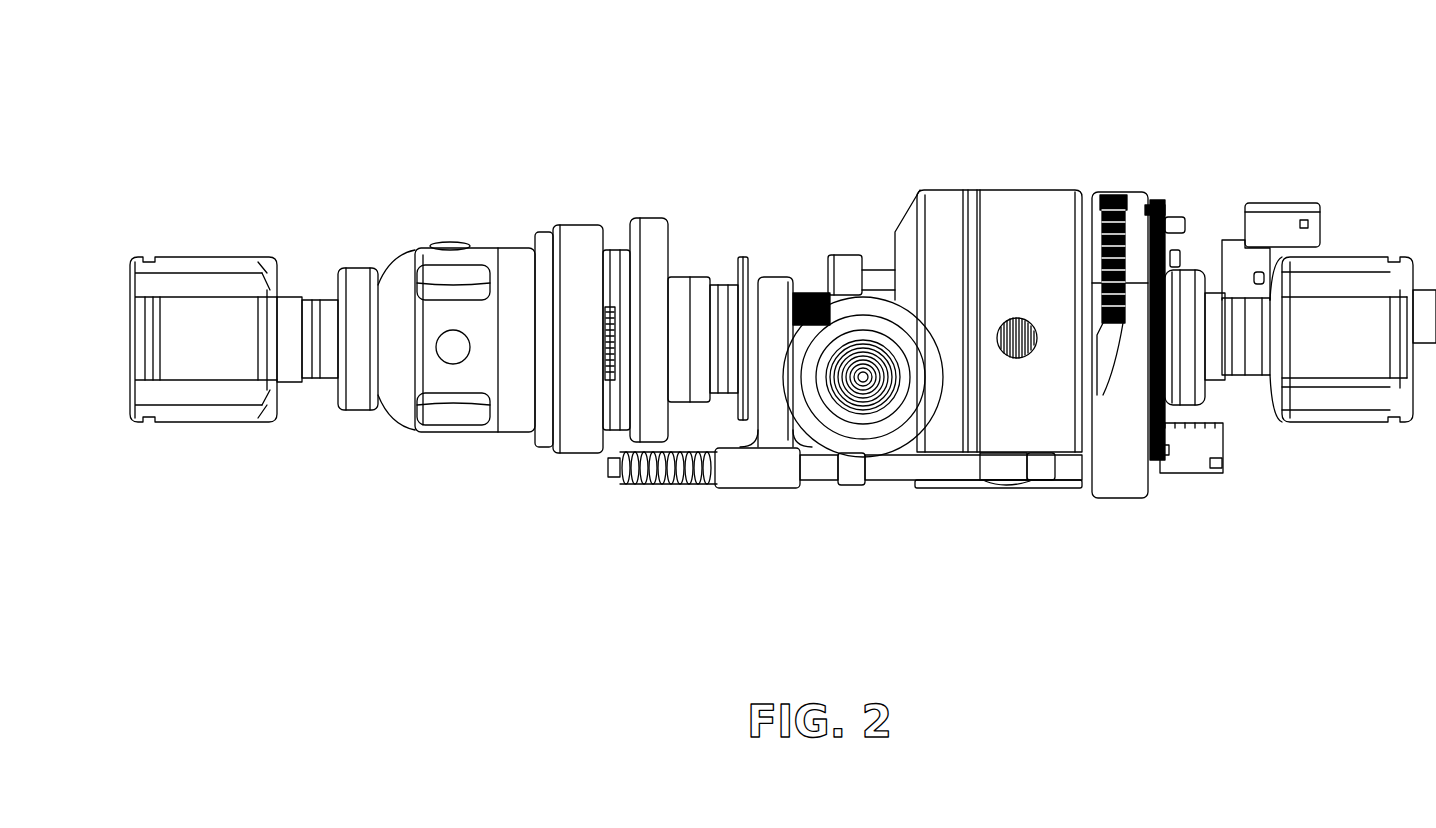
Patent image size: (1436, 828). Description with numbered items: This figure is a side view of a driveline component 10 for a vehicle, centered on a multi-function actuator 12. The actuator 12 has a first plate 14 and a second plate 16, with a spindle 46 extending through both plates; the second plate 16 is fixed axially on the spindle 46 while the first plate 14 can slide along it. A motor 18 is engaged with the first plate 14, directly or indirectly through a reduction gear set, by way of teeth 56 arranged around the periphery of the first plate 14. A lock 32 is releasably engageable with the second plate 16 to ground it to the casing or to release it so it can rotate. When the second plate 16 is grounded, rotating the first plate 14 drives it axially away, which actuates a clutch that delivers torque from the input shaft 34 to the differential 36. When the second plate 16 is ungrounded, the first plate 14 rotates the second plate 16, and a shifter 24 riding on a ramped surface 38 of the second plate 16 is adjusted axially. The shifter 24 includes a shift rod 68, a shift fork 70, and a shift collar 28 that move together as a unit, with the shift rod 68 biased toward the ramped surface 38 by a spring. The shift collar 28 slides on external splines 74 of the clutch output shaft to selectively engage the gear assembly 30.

The driveline component 10 is at (806, 88).
The actuator 12 is at (1163, 575).
The first plate 14 is at (1108, 195).
The second plate 16 is at (1136, 200).
The motor 18 is at (1238, 242).
The shifter 24 is at (754, 502).
The shift collar 28 is at (772, 280).
The gear assembly 30 is at (573, 196).
The lock 32 is at (1193, 474).
The input shaft 34 is at (1372, 425).
The differential 36 is at (428, 244).
The ramped surface 38 is at (1080, 410).
The spindle 46 is at (1216, 362).
The teeth 56 is at (1122, 180).
The shift rod 68 is at (895, 468).
The shift fork 70 is at (758, 277).
The external splines 74 is at (806, 280).